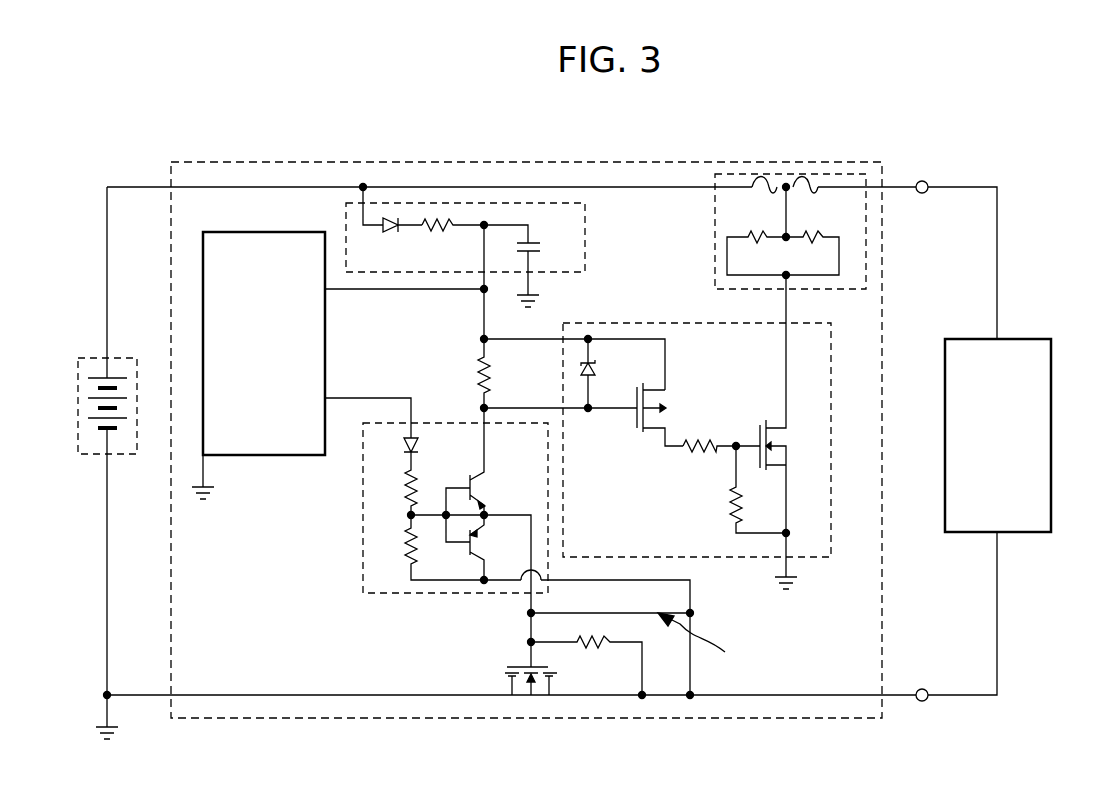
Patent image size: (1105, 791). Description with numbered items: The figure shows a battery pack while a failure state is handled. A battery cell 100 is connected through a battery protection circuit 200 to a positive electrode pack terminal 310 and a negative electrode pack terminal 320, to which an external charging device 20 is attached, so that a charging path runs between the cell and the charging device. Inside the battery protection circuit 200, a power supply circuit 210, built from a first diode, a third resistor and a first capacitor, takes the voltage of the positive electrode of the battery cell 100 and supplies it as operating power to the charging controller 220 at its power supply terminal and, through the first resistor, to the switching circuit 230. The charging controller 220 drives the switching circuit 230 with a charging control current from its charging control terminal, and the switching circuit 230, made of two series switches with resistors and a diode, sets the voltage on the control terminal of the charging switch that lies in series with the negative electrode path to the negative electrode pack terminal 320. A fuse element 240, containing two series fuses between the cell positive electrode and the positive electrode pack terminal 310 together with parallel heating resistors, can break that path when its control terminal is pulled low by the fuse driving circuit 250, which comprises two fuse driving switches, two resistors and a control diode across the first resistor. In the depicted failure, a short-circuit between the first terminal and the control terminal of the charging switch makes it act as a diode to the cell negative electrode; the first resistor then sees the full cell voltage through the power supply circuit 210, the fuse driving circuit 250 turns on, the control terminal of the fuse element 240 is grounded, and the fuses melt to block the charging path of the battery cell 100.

The charging device 20 is at (1026, 339).
The battery cell 100 is at (93, 358).
The battery protection circuit 200 is at (418, 720).
The power supply circuit 210 is at (585, 232).
The charging controller 220 is at (325, 343).
The switching circuit 230 is at (363, 550).
The fuse element 240 is at (783, 174).
The fuse driving circuit 250 is at (657, 322).
The positive electrode pack terminal 310 is at (924, 180).
The negative electrode pack terminal 320 is at (922, 702).